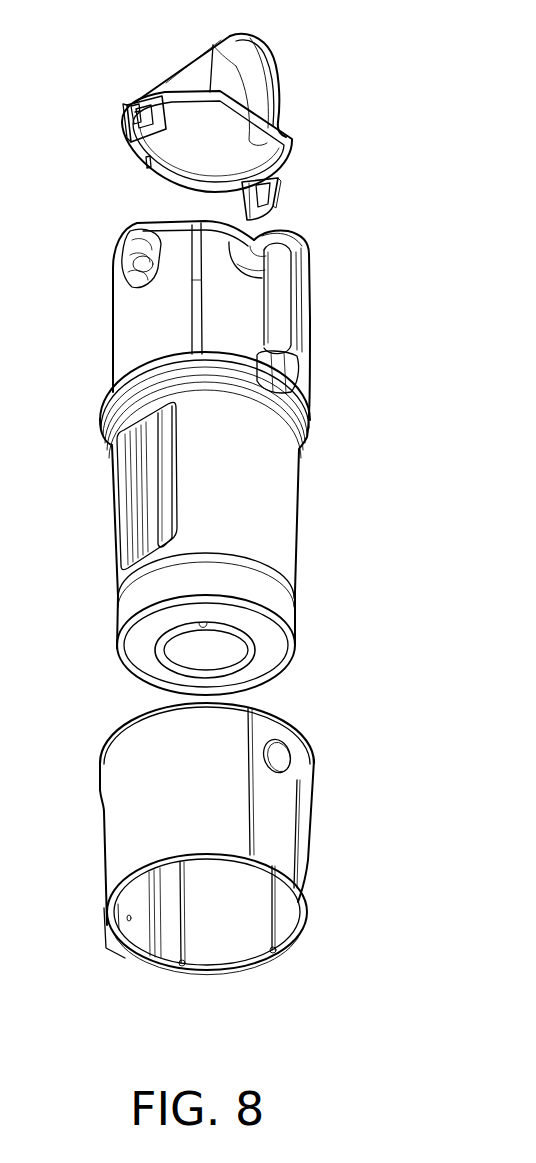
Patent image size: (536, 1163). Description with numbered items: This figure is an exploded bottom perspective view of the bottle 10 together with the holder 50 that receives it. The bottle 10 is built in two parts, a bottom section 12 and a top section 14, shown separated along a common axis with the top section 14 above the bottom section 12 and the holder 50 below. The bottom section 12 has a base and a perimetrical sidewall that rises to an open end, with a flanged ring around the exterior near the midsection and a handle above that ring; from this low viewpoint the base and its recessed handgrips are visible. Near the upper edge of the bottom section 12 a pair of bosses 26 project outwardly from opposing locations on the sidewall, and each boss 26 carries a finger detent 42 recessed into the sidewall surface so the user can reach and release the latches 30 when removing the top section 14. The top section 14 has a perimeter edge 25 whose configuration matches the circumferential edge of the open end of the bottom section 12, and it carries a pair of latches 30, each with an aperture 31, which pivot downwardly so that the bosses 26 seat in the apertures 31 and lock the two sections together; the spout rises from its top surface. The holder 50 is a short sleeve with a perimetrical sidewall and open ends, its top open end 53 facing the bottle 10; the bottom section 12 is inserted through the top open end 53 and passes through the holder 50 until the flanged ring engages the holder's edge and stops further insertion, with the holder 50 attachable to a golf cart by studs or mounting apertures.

The bottle 10 is at (352, 76).
The bottom section 12 is at (293, 475).
The top section 14 is at (284, 102).
The perimeter edge 25 is at (128, 156).
The bosses 26 is at (133, 240).
The latches 30 is at (127, 123).
The apertures 31 is at (136, 110).
The finger detents 42 is at (137, 273).
The holder 50 is at (90, 944).
The top open end 53 is at (250, 923).